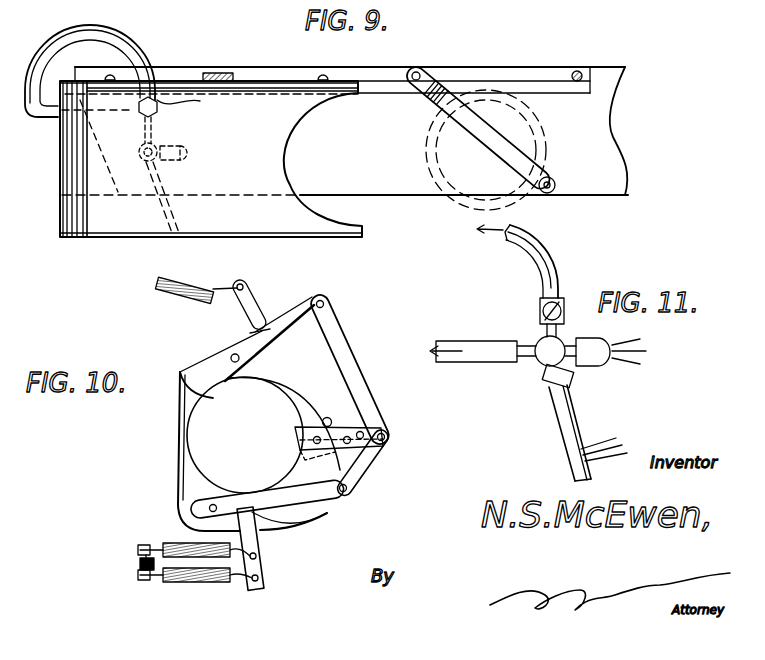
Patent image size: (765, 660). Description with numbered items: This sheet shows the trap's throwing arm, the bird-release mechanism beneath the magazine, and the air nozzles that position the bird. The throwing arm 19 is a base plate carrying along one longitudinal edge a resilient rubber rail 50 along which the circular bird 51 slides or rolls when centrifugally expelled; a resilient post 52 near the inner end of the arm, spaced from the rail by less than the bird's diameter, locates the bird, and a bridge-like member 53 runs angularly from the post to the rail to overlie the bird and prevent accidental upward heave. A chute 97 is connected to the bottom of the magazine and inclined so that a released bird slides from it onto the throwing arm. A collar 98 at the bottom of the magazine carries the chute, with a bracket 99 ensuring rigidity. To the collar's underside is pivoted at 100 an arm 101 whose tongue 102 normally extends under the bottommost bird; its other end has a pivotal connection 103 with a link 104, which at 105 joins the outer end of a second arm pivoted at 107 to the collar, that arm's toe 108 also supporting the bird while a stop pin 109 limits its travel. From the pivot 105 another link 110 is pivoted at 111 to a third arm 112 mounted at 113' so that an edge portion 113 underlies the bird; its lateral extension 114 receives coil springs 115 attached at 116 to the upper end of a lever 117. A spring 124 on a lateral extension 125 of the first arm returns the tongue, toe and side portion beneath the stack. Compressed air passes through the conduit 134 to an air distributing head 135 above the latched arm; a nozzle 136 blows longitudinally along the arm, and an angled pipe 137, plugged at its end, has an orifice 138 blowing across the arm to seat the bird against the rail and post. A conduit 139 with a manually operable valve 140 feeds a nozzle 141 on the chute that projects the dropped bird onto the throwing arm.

In FIG. 9, the throwing arm 19 is at (597, 155).
In FIG. 9, the resilient rail 50 is at (540, 86).
In FIG. 9, the bird 51 is at (545, 148).
In FIG. 9, the resilient post 52 is at (556, 190).
In FIG. 9, the bridge-like member 53 is at (473, 127).
In FIG. 9, the chute 97 is at (294, 233).
In FIG. 10, the collar 98 is at (299, 370).
In FIG. 9, the bracket 99 is at (228, 73).
In FIG. 10, the pivot 100 is at (231, 356).
In FIG. 10, the arm 101 is at (284, 320).
In FIG. 10, the tongue 102 is at (245, 435).
In FIG. 10, the pivotal connection 103 is at (326, 306).
In FIG. 10, the link 104 is at (350, 354).
In FIG. 10, the pivotal connection 105 is at (389, 441).
In FIG. 10, the pivot 107 is at (292, 415).
In FIG. 10, the toe 108 is at (296, 436).
In FIG. 10, the stop pin 109 is at (332, 417).
In FIG. 10, the link 110 is at (364, 462).
In FIG. 10, the pivot 111 is at (352, 491).
In FIG. 10, the third arm 112 is at (312, 500).
In FIG. 10, the edge portion 113 is at (267, 493).
In FIG. 10, the pivot 113' is at (222, 486).
In FIG. 10, the lateral extension 114 is at (260, 540).
In FIG. 10, the coil springs 115 is at (198, 570).
In FIG. 10, the spring connection 116 is at (146, 560).
In FIG. 10, the lever 117 is at (140, 578).
In FIG. 10, the spring 124 is at (158, 287).
In FIG. 10, the lateral extension 125 is at (246, 315).
In FIG. 11, the conduit 134 is at (490, 334).
In FIG. 11, the air distributing head 135 is at (540, 360).
In FIG. 9, the nozzle 136 is at (178, 147).
In FIG. 11, the nozzle 136 is at (600, 364).
In FIG. 9, the pipe 137 is at (158, 202).
In FIG. 11, the pipe 137 is at (568, 421).
In FIG. 9, the orifice 138 is at (180, 214).
In FIG. 11, the orifice 138 is at (580, 457).
In FIG. 9, the conduit 139 is at (47, 46).
In FIG. 11, the conduit 139 is at (545, 262).
In FIG. 9, the manually operable valve 140 is at (142, 130).
In FIG. 11, the manually operable valve 140 is at (538, 307).
In FIG. 9, the nozzle 141 is at (193, 107).